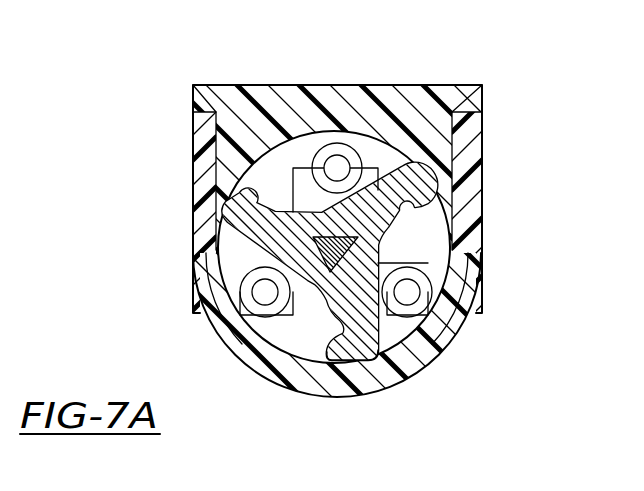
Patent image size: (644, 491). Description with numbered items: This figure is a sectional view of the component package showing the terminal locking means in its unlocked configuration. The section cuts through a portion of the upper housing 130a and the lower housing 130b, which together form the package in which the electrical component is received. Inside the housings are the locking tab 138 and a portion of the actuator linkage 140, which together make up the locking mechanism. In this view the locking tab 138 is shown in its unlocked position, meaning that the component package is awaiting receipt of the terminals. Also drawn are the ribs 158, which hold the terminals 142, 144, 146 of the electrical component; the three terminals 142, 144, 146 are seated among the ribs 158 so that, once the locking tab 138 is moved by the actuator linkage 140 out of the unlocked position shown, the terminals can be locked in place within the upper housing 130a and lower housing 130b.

The upper housing 130a is at (457, 86).
The lower housing 130b is at (483, 200).
The locking tab 138 is at (360, 358).
The actuator linkage 140 is at (303, 293).
The terminal 142 is at (335, 157).
The terminal 144 is at (422, 296).
The terminal 146 is at (258, 305).
The ribs 158 is at (351, 152).